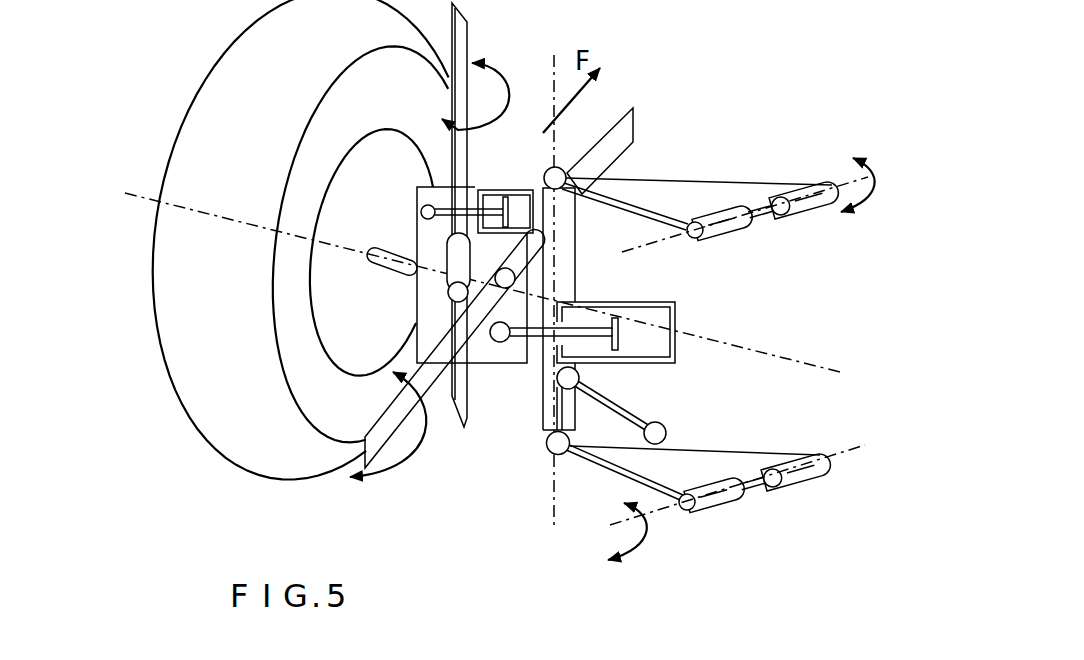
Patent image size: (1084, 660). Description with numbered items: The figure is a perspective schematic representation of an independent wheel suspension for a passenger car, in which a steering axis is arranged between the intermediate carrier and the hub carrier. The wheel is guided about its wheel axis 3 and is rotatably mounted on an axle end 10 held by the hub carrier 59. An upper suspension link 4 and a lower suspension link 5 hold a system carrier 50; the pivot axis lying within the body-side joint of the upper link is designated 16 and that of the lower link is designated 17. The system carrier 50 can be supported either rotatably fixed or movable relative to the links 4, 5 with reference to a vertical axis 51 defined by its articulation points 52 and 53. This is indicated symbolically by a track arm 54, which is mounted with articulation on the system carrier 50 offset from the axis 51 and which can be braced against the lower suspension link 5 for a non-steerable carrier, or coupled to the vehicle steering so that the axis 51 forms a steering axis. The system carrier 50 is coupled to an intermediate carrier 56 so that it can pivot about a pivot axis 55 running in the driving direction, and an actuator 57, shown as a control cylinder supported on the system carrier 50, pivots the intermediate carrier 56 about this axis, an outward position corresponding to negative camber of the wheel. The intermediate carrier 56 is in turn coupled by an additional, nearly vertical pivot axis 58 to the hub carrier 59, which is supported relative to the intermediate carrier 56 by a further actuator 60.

The wheel axis 3 is at (138, 196).
The upper suspension link 4 is at (718, 193).
The lower suspension link 5 is at (730, 467).
The axle end 10 is at (392, 272).
The pivot axis of upper link 16 is at (633, 253).
The pivot axis of lower link 17 is at (847, 460).
The system carrier 50 is at (548, 398).
The vertical axis 51 is at (555, 515).
The articulation point 52 is at (549, 455).
The articulation point 53 is at (565, 170).
The track arm 54 is at (578, 384).
The pivot axis 55 is at (620, 180).
The intermediate carrier 56 is at (512, 357).
The actuator 57 is at (678, 319).
The additional pivot axis 58 is at (447, 240).
The hub carrier 59 is at (415, 210).
The actuator 60 is at (518, 190).